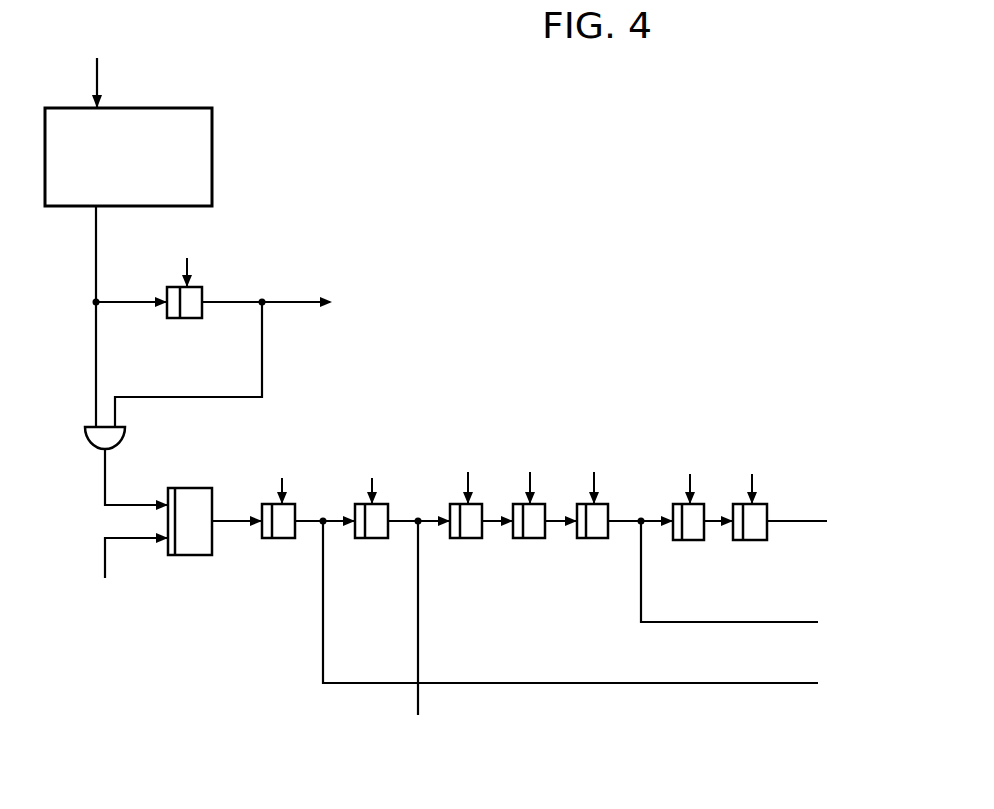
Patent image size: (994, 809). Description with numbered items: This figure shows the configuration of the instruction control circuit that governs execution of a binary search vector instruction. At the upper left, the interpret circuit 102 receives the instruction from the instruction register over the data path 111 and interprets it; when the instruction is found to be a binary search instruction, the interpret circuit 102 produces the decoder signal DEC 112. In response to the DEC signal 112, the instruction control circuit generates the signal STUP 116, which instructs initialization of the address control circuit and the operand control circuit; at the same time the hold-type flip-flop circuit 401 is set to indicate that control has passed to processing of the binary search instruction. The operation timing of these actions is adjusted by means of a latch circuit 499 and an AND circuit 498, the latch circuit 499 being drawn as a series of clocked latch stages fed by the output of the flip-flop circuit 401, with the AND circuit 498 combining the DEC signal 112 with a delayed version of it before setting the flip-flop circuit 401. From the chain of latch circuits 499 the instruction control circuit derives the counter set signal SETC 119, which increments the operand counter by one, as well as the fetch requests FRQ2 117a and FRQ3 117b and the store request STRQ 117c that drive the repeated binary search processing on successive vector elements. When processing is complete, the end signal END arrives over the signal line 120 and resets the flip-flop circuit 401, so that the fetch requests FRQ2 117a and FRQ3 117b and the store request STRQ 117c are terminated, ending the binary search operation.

The interpret circuit 102 is at (212, 143).
The data path 111 is at (98, 65).
The decoder (DEC) signal 112 is at (94, 268).
The latch circuit 499 is at (182, 318).
The STUP signal 116 is at (305, 298).
The AND circuit 498 is at (88, 452).
The signal line 120 is at (103, 565).
The hold-type flip-flop circuit 401 is at (192, 555).
The store request STRQ 117c is at (812, 518).
The fetch request FRQ3 117b is at (680, 623).
The fetch request FRQ2 117a is at (740, 683).
The counter set signal 119 is at (418, 695).